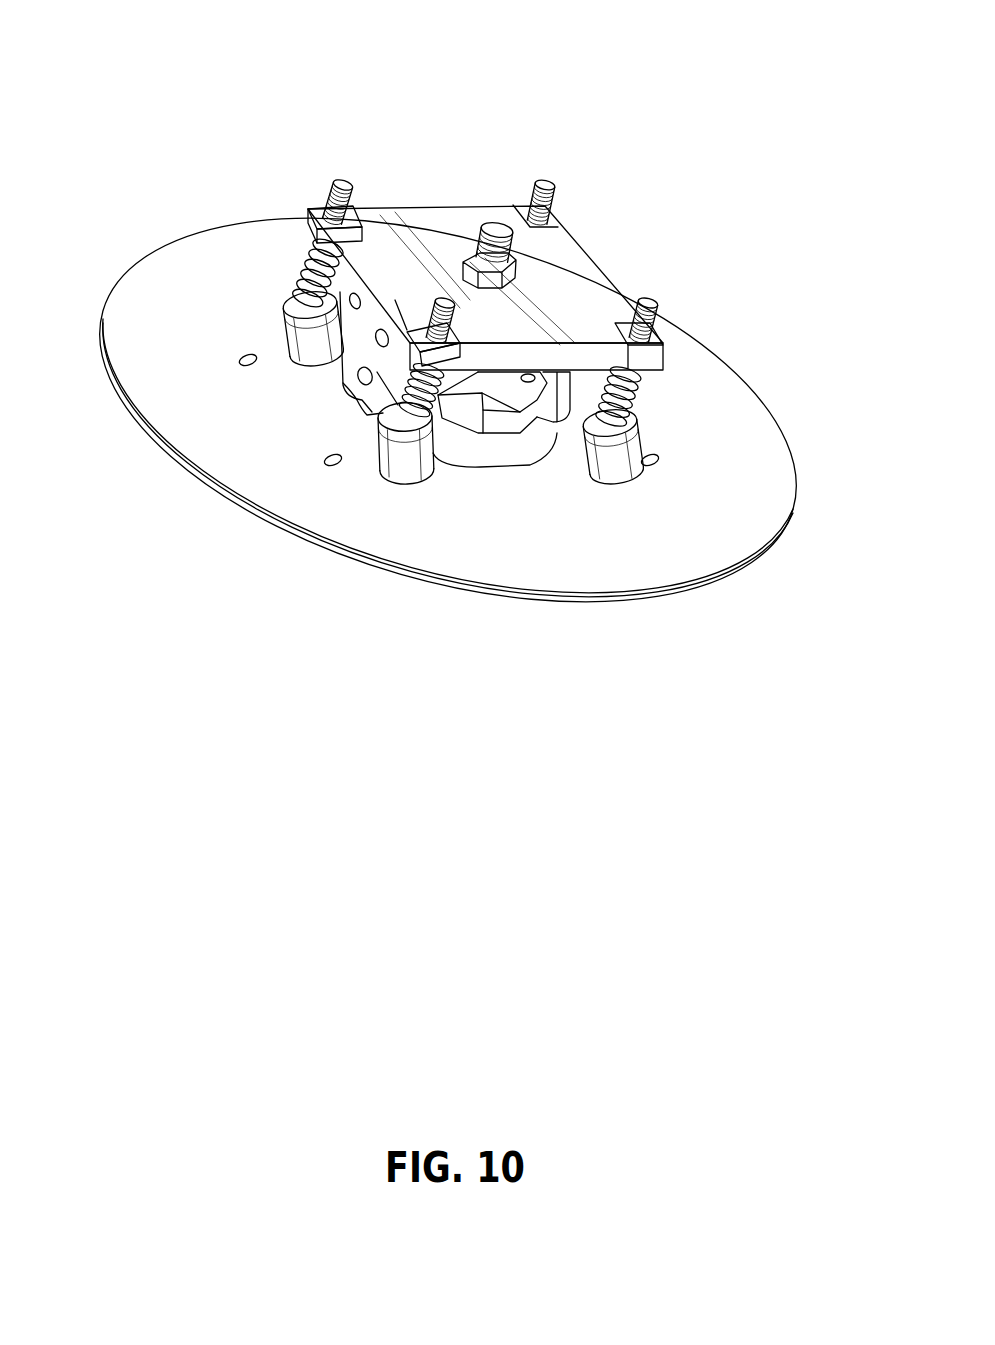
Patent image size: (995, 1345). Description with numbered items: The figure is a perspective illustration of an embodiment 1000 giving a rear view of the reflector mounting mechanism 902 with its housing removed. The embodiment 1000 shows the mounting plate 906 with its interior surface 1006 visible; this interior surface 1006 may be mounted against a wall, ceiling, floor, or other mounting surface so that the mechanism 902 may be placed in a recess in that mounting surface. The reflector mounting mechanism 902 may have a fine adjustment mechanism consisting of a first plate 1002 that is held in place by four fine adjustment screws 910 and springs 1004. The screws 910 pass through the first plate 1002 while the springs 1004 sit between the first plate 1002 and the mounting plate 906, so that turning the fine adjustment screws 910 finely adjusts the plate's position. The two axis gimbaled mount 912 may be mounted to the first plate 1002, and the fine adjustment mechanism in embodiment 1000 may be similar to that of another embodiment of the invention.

The fine adjustment screws 910 is at (340, 183).
The first plate 1002 is at (438, 218).
The springs 1004 is at (303, 273).
The mounting plate 906 is at (728, 377).
The two axis gimbaled mount 912 is at (363, 398).
The reflector mounting mechanism 902 is at (430, 580).
The interior surface 1006 is at (730, 507).
The embodiment 1000 is at (578, 778).